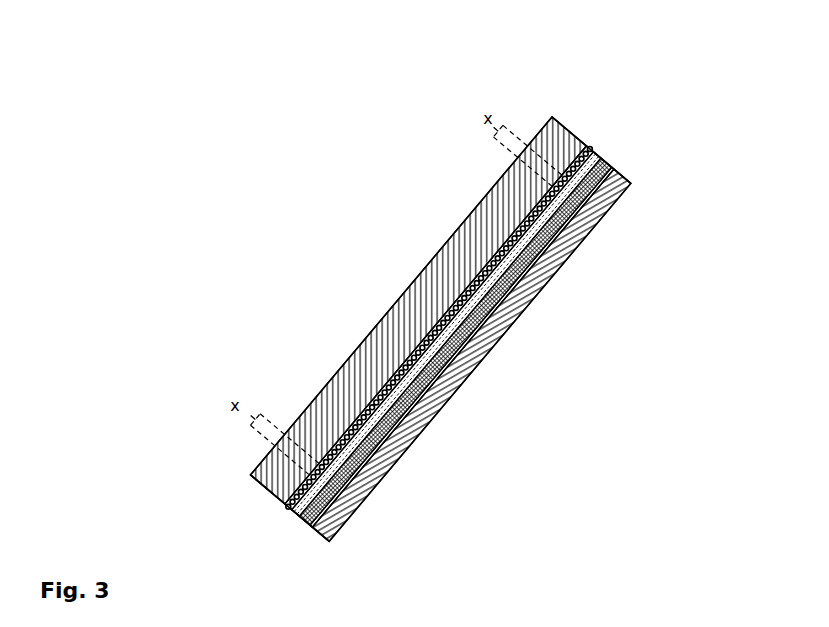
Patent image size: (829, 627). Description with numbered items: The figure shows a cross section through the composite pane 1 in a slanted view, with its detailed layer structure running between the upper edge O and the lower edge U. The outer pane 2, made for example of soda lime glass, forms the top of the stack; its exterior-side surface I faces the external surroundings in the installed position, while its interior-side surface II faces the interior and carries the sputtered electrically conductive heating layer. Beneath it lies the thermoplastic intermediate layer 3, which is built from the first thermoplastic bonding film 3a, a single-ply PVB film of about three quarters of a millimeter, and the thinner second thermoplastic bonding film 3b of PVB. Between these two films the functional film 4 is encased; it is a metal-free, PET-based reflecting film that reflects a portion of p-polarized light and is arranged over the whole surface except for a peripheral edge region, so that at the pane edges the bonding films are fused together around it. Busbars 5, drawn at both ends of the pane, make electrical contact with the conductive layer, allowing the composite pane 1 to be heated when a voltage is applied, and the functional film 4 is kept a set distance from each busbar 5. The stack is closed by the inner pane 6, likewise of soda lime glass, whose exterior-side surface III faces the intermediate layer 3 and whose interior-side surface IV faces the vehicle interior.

The composite pane 1 is at (312, 230).
The outer pane 2 is at (440, 295).
The thermoplastic intermediate layer 3 is at (600, 157).
The first thermoplastic bonding film 3a is at (510, 245).
The second thermoplastic bonding film 3b is at (530, 268).
The functional film 4 is at (570, 213).
The busbar 5 is at (624, 190).
The inner pane 6 is at (503, 322).
The upper edge of the composite pane O is at (562, 122).
The lower edge of the composite pane U is at (277, 507).
The exterior-side surface of the outer pane I is at (322, 390).
The interior-side surface of the outer pane II is at (402, 363).
The exterior-side surface of the inner pane III is at (433, 390).
The interior-side surface of the inner pane IV is at (393, 465).